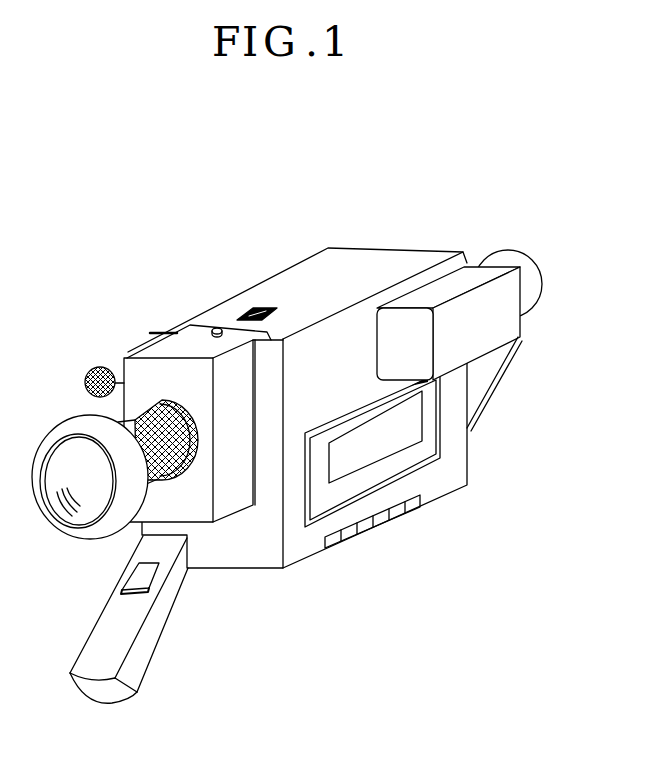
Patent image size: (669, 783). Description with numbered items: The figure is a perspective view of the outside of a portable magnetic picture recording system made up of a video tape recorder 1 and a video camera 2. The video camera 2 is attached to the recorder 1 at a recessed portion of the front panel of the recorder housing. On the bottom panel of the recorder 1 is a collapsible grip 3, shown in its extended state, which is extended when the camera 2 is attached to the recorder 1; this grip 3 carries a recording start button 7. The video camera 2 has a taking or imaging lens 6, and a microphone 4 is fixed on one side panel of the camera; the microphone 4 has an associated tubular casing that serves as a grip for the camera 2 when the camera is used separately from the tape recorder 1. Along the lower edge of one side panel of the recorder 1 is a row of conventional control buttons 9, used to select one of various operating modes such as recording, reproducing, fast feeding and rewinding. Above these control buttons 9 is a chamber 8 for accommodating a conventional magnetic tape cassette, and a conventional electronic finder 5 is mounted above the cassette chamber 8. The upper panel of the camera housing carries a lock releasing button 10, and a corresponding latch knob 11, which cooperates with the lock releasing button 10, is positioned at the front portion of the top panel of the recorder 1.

The video tape recorder 1 is at (289, 278).
The video camera 2 is at (150, 350).
The collapsible grip 3 is at (163, 622).
The microphone 4 is at (121, 367).
The electronic finder 5 is at (510, 323).
The imaging lens 6 is at (85, 418).
The recording start button 7 is at (153, 572).
The cassette chamber 8 is at (428, 445).
The control buttons 9 is at (413, 503).
The lock releasing button 10 is at (214, 329).
The latch knob 11 is at (258, 306).